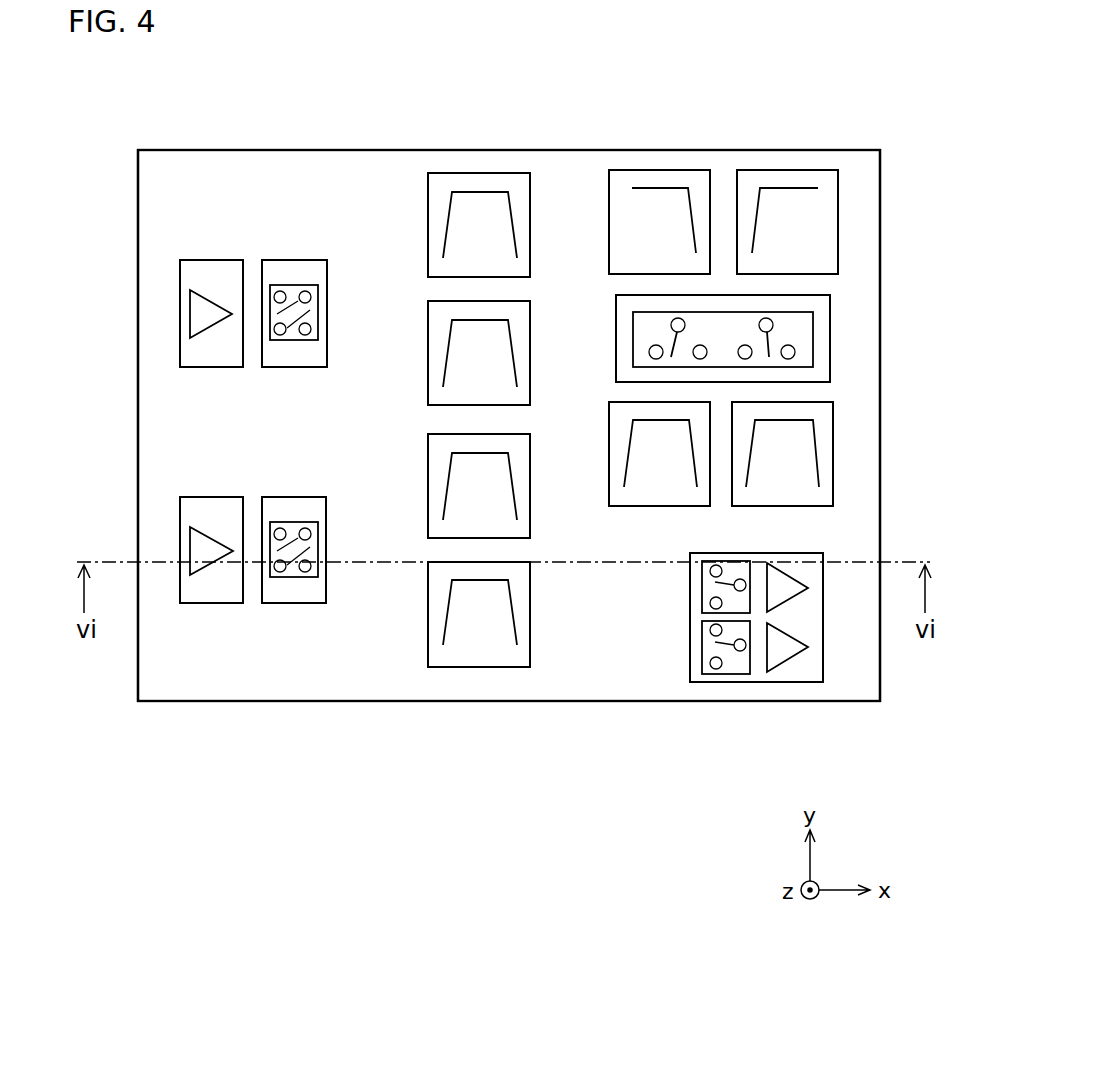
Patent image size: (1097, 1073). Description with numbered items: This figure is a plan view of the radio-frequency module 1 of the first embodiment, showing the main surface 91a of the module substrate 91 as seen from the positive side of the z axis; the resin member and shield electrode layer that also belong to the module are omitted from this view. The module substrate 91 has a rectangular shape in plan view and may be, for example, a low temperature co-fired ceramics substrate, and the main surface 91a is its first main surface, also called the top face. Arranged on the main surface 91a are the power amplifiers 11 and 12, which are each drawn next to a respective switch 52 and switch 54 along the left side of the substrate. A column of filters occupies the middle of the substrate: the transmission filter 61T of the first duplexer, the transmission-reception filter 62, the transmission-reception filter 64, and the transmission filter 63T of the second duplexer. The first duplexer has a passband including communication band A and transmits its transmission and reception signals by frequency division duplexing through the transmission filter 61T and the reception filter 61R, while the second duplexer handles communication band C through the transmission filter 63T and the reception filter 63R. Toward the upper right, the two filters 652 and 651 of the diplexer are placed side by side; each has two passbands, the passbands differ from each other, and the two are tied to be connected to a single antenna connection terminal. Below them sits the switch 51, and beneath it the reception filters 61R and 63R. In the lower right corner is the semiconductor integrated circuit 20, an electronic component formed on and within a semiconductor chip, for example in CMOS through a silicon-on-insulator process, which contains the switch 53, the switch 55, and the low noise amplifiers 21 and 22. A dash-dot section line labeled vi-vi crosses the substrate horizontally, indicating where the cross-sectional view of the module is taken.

The radio-frequency module 1 is at (858, 97).
The module substrate 91 is at (445, 150).
The main surface 91a is at (205, 168).
The power amplifier 11 is at (207, 260).
The power amplifier 12 is at (207, 497).
The switch 52 is at (290, 260).
The switch 54 is at (290, 497).
The transmission filter 61T is at (530, 237).
The transmission-reception filter 62 is at (530, 365).
The transmission-reception filter 64 is at (530, 500).
The transmission filter 63T is at (530, 615).
The filter 652 is at (650, 170).
The filter 651 is at (777, 170).
The switch 51 is at (830, 342).
The reception filter 61R is at (609, 452).
The reception filter 63R is at (833, 470).
The semiconductor integrated circuit 20 is at (690, 620).
The switch 53 is at (702, 583).
The switch 55 is at (702, 660).
The low noise amplifier 21 is at (806, 588).
The low noise amplifier 22 is at (806, 647).